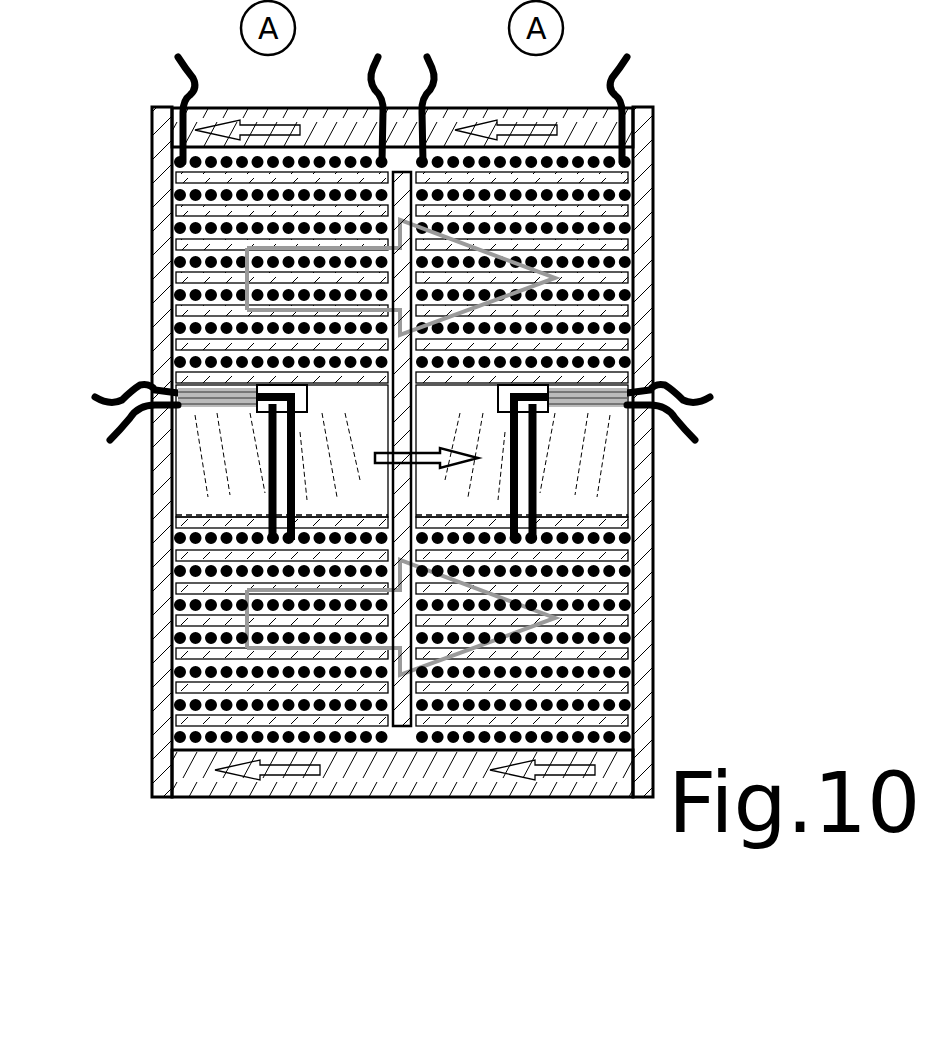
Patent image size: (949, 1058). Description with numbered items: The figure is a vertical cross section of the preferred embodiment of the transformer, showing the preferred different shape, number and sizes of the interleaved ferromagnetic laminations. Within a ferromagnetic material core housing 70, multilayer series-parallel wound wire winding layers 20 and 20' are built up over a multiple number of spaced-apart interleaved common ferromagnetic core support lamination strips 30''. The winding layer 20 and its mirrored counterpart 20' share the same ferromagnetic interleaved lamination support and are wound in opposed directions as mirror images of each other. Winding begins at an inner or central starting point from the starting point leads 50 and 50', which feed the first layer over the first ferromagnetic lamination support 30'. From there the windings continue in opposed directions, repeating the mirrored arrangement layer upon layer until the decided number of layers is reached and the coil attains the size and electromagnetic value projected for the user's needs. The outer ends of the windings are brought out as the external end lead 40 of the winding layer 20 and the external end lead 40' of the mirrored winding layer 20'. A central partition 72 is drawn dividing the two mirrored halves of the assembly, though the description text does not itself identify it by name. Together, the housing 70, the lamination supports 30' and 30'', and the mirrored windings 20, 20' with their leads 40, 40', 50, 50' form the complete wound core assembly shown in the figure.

The winding layer 20 is at (403, 700).
The mirrored winding layer 20' is at (401, 803).
The first ferromagnetic lamination support 30' is at (402, 451).
The interleaved common ferromagnetic core support lamination strips 30'' is at (405, 449).
The external end lead 40 is at (403, 194).
The external end lead of mirrored winding layer 40' is at (410, 94).
The starting point lead 50 is at (404, 460).
The starting point lead of mirrored winding 50' is at (403, 430).
The ferromagnetic material core housing 70 is at (304, 120).
The partition wall 72 is at (392, 503).